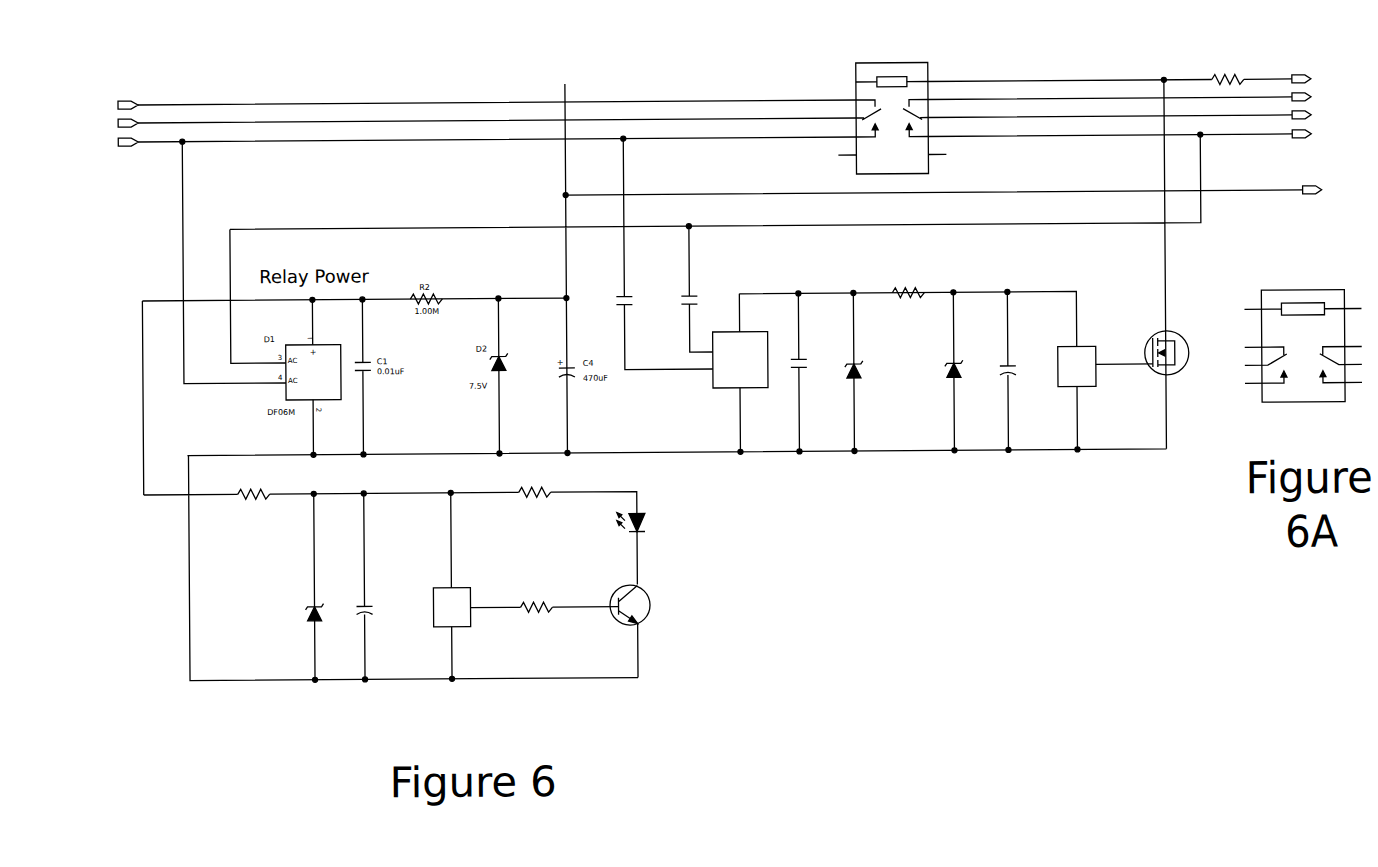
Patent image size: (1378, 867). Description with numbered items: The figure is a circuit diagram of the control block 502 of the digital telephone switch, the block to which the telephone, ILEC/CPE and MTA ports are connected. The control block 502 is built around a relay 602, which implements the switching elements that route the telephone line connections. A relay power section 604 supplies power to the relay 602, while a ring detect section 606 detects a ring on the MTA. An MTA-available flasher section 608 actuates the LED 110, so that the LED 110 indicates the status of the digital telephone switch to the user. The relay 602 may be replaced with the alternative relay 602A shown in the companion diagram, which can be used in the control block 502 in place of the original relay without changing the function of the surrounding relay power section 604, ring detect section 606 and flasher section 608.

In FIG. 6, the control block 502 is at (873, 632).
In FIG. 6, the relay 602 is at (921, 70).
In FIG. 6A, the alternative relay 602A is at (1338, 289).
In FIG. 6, the relay power section 604 is at (163, 236).
In FIG. 6, the ring detect section 606 is at (957, 492).
In FIG. 6, the MTA-available flasher section 608 is at (602, 701).
In FIG. 6, the LED 110 is at (652, 521).